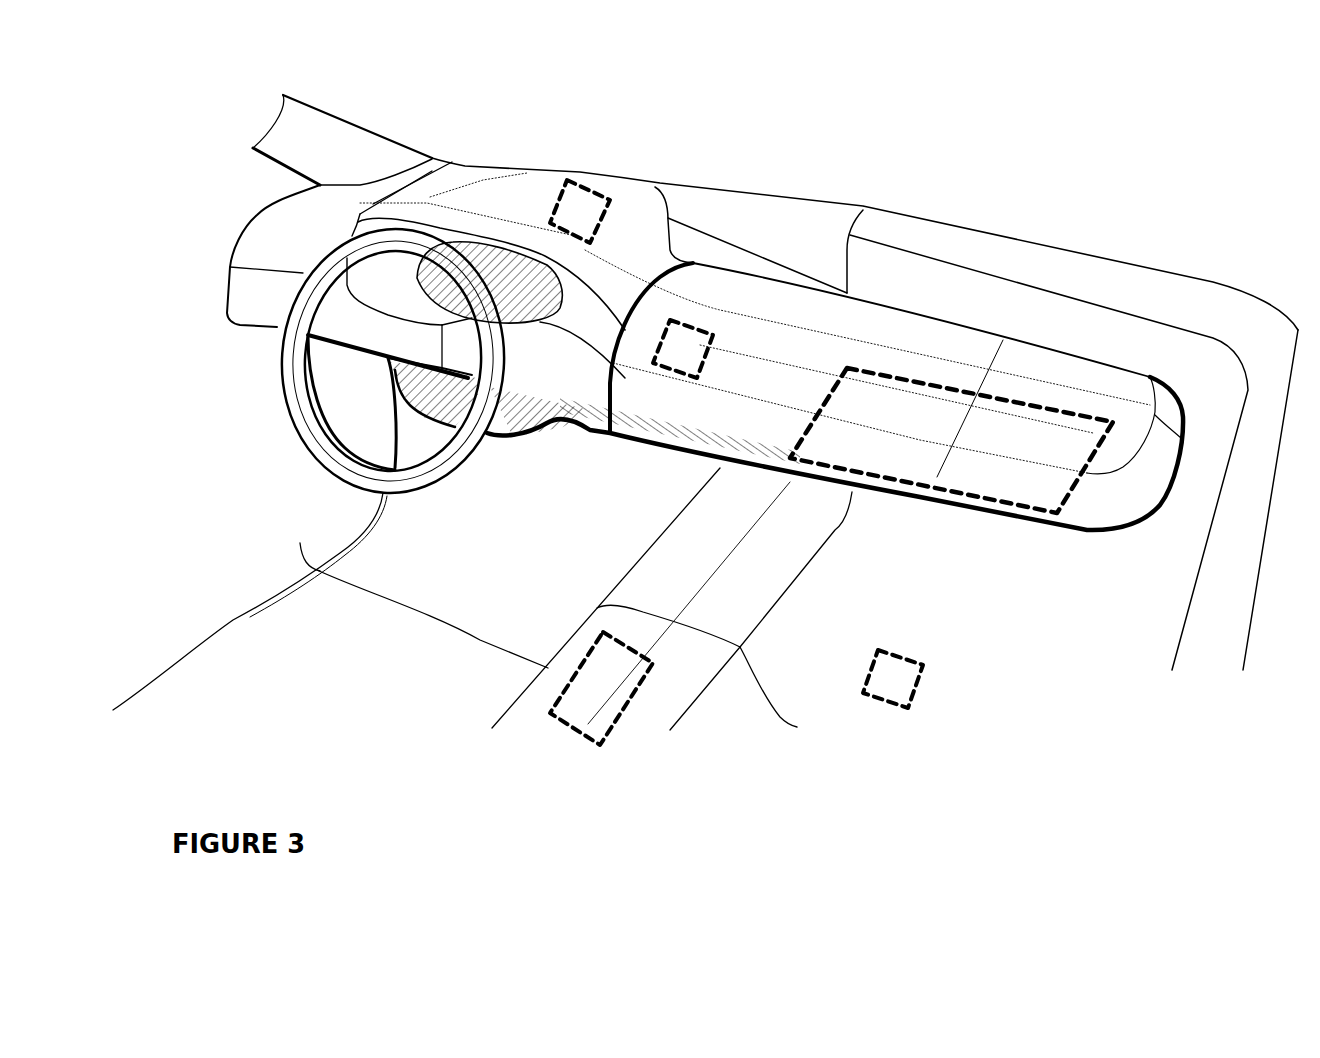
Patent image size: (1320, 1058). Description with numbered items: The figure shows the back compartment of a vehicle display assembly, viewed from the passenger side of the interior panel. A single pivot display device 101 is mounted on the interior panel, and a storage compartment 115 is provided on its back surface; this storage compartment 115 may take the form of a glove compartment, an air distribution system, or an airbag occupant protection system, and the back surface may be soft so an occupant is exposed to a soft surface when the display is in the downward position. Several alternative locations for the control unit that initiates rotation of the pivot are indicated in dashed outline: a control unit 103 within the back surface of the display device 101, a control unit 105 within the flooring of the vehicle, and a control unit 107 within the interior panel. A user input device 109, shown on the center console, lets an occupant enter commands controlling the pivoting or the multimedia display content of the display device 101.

The display device 101 is at (910, 313).
The control unit 103 is at (663, 335).
The control unit 105 is at (917, 683).
The control unit 107 is at (573, 180).
The user input device 109 is at (580, 670).
The storage compartment 115 is at (958, 502).